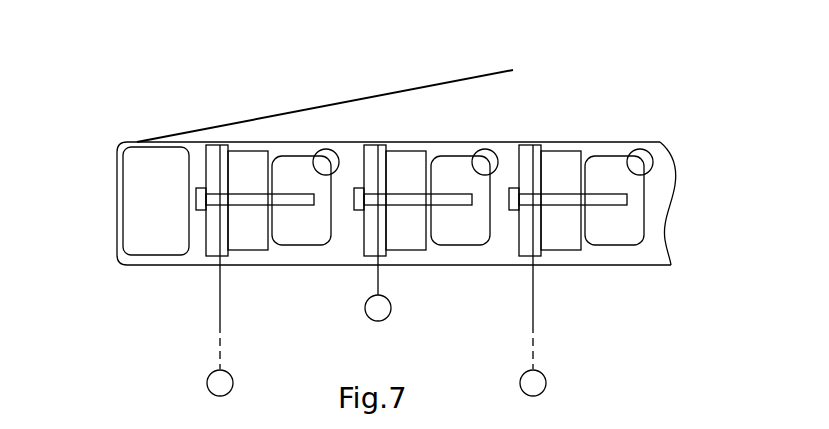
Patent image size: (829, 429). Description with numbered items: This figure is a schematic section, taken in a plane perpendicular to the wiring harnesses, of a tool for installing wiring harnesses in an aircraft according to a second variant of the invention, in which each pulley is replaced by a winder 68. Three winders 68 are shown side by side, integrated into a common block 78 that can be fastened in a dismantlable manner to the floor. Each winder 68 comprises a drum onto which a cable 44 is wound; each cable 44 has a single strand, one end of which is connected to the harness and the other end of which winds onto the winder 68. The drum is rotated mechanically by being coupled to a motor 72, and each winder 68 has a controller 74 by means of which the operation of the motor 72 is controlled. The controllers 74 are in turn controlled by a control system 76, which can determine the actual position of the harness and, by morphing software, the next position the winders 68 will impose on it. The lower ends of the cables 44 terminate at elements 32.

The sensor 32 is at (207, 383).
The cable 44 is at (218, 277).
The winder 68 is at (212, 150).
The motor 72 is at (300, 157).
The controller 74 is at (323, 148).
The control system 76 is at (137, 155).
The block 78 is at (117, 185).